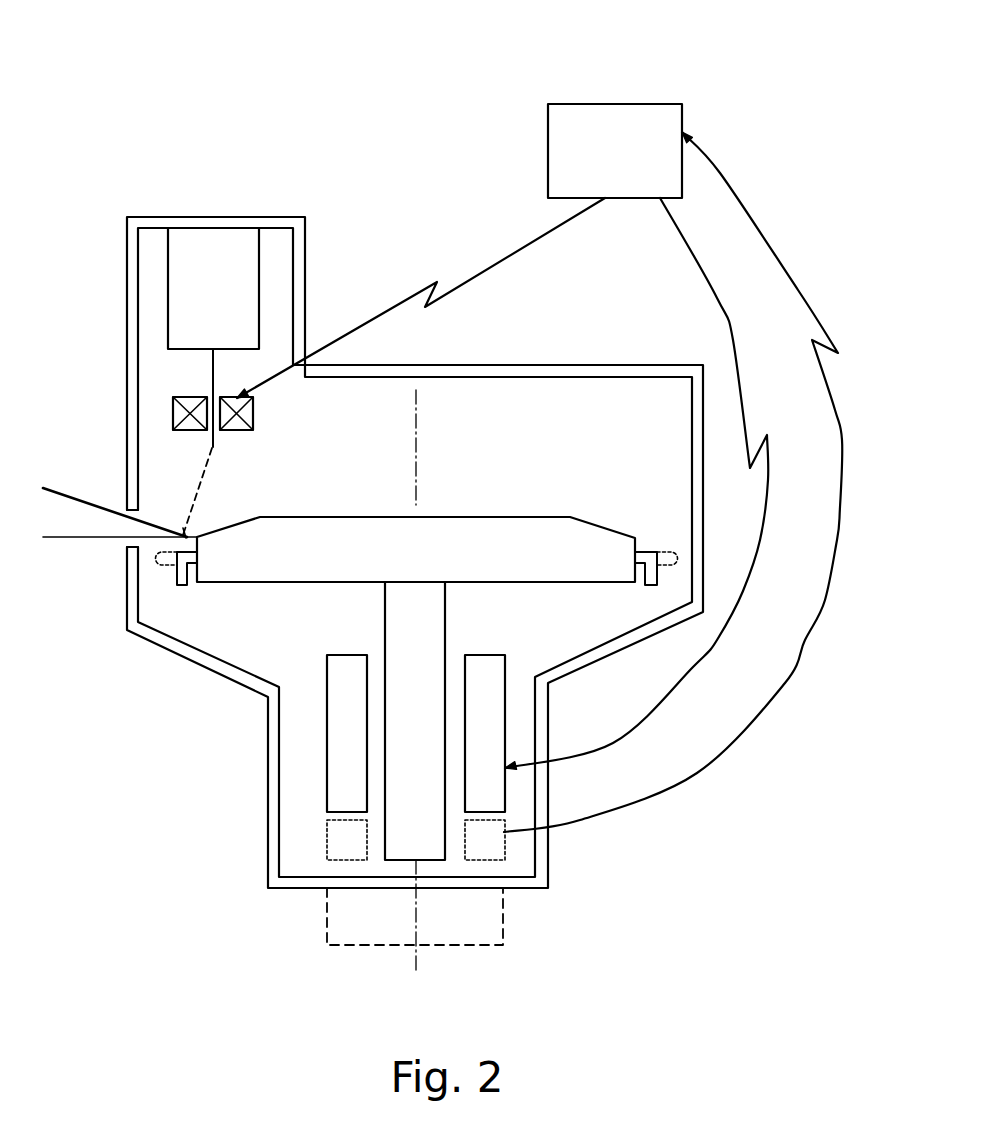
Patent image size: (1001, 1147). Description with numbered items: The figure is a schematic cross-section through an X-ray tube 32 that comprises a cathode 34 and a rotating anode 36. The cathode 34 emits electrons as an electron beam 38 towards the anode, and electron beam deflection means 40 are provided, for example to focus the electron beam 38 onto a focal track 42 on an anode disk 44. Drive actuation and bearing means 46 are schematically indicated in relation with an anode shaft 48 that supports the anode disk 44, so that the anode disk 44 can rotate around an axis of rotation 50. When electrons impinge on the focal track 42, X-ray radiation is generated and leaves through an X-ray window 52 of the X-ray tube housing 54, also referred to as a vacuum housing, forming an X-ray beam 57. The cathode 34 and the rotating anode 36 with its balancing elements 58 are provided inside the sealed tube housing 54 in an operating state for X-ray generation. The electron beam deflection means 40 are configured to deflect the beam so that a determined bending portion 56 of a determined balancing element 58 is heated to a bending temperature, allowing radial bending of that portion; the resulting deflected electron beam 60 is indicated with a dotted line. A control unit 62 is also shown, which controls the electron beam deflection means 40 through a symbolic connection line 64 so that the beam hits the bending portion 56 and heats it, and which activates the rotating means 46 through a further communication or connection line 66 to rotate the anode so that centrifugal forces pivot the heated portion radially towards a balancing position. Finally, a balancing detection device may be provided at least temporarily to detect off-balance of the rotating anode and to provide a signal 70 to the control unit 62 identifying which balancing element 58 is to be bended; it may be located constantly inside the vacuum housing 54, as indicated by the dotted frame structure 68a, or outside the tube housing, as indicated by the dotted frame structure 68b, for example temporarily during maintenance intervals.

The X-ray tube 32 is at (415, 527).
The cathode 34 is at (213, 240).
The rotating anode 36 is at (337, 497).
The electron beam 38 is at (217, 367).
The electron beam deflection means 40 is at (172, 415).
The focal track 42 is at (220, 525).
The anode disk 44 is at (416, 501).
The drive actuation and bearing means 46 is at (327, 742).
The anode shaft 48 is at (433, 613).
The axis of rotation 50 is at (417, 395).
The X-ray window 52 is at (130, 527).
The X-ray tube housing 54 is at (595, 367).
The bending portion 56 is at (182, 532).
The X-ray beam 57 is at (75, 497).
The balancing element 58 is at (192, 595).
The deflected electron beam 60 is at (207, 462).
The control unit 62 is at (613, 104).
The symbolic connection line 64 is at (333, 337).
The communication or connection line 66 is at (743, 591).
The dotted frame structure 68a is at (327, 837).
The dotted frame structure 68b is at (327, 922).
The signal 70 is at (752, 713).